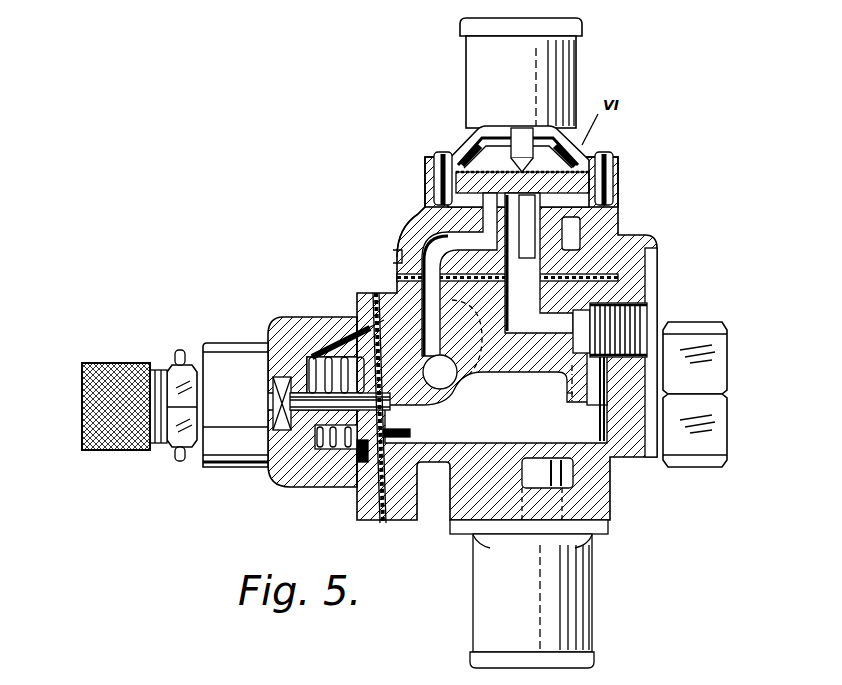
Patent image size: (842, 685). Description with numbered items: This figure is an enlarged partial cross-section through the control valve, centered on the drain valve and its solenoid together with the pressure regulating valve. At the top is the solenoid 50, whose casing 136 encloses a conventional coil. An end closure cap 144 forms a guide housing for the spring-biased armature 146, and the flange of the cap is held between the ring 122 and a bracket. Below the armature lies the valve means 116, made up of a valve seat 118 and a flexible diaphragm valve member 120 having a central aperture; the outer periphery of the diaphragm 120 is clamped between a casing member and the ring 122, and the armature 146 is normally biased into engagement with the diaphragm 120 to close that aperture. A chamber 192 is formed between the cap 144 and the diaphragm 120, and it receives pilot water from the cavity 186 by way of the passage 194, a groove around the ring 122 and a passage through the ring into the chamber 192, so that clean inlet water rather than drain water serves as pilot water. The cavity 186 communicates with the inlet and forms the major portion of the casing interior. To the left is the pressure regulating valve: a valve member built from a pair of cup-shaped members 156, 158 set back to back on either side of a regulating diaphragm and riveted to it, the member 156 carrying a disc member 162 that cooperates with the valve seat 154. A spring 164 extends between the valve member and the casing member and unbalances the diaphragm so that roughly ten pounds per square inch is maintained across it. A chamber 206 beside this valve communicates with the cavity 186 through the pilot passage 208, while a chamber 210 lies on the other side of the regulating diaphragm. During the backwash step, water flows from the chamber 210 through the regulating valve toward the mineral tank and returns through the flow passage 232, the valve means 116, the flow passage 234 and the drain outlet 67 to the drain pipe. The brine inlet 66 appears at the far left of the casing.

The solenoid 50 is at (482, 79).
The brine inlet 66 is at (82, 410).
The drain outlet 67 is at (636, 314).
The valve means 116 is at (540, 207).
The valve seat 118 is at (527, 238).
The diaphragm valve member 120 is at (440, 187).
The ring 122 is at (600, 172).
The solenoid casing 136 is at (590, 152).
The end closure cap 144 is at (512, 132).
The armature 146 is at (516, 145).
The valve seat 154 is at (293, 340).
The cup-shaped member 156 is at (358, 314).
The cup-shaped member 158 is at (392, 433).
The disc member 162 is at (320, 452).
The spring 164 is at (290, 482).
The cavity 186 is at (530, 432).
The chamber 192 is at (560, 145).
The passage 194 is at (575, 230).
The chamber 206 is at (392, 460).
The pilot passage 208 is at (425, 413).
The chamber 210 is at (360, 462).
The flow passage 232 is at (397, 256).
The flow passage 234 is at (432, 240).